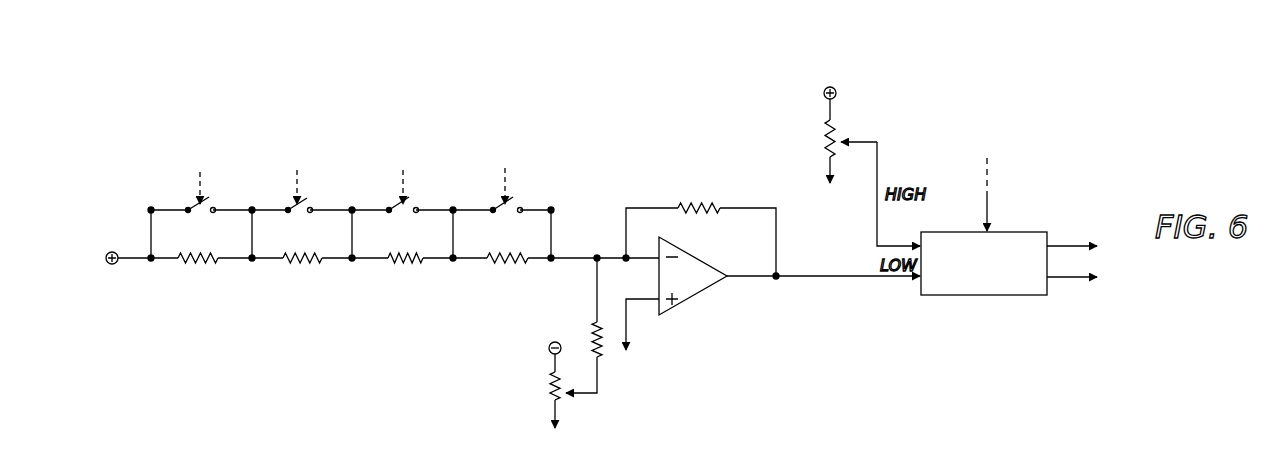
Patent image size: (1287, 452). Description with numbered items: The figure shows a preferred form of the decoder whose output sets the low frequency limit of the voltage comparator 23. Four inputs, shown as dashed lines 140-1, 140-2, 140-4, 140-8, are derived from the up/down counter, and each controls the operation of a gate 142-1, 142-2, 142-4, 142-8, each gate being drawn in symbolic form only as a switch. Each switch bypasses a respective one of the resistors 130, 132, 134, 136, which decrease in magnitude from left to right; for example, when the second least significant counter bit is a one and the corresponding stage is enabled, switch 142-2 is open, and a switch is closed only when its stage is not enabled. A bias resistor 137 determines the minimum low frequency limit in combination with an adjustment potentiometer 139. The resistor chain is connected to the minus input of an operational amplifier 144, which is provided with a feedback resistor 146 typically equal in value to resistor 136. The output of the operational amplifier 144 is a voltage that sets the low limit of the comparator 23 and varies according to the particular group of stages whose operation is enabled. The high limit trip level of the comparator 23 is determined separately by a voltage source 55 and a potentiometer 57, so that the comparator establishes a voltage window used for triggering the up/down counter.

The resistor 130 is at (200, 263).
The resistor 132 is at (299, 263).
The resistor 134 is at (408, 263).
The resistor 136 is at (508, 263).
The bias resistor 137 is at (594, 330).
The adjustment potentiometer 139 is at (550, 396).
The dashed line (decoder input) 140-8 is at (200, 167).
The dashed line (decoder input) 140-4 is at (297, 165).
The dashed line (decoder input) 140-2 is at (403, 165).
The dashed line (decoder input) 140-1 is at (505, 163).
The gate 142-8 is at (211, 220).
The gate 142-4 is at (294, 221).
The gate 142-2 is at (396, 220).
The gate 142-1 is at (501, 220).
The operational amplifier 144 is at (703, 294).
The feedback resistor 146 is at (706, 202).
The voltage source 55 is at (838, 95).
The potentiometer 57 is at (828, 137).
The voltage comparator 23 is at (1025, 230).